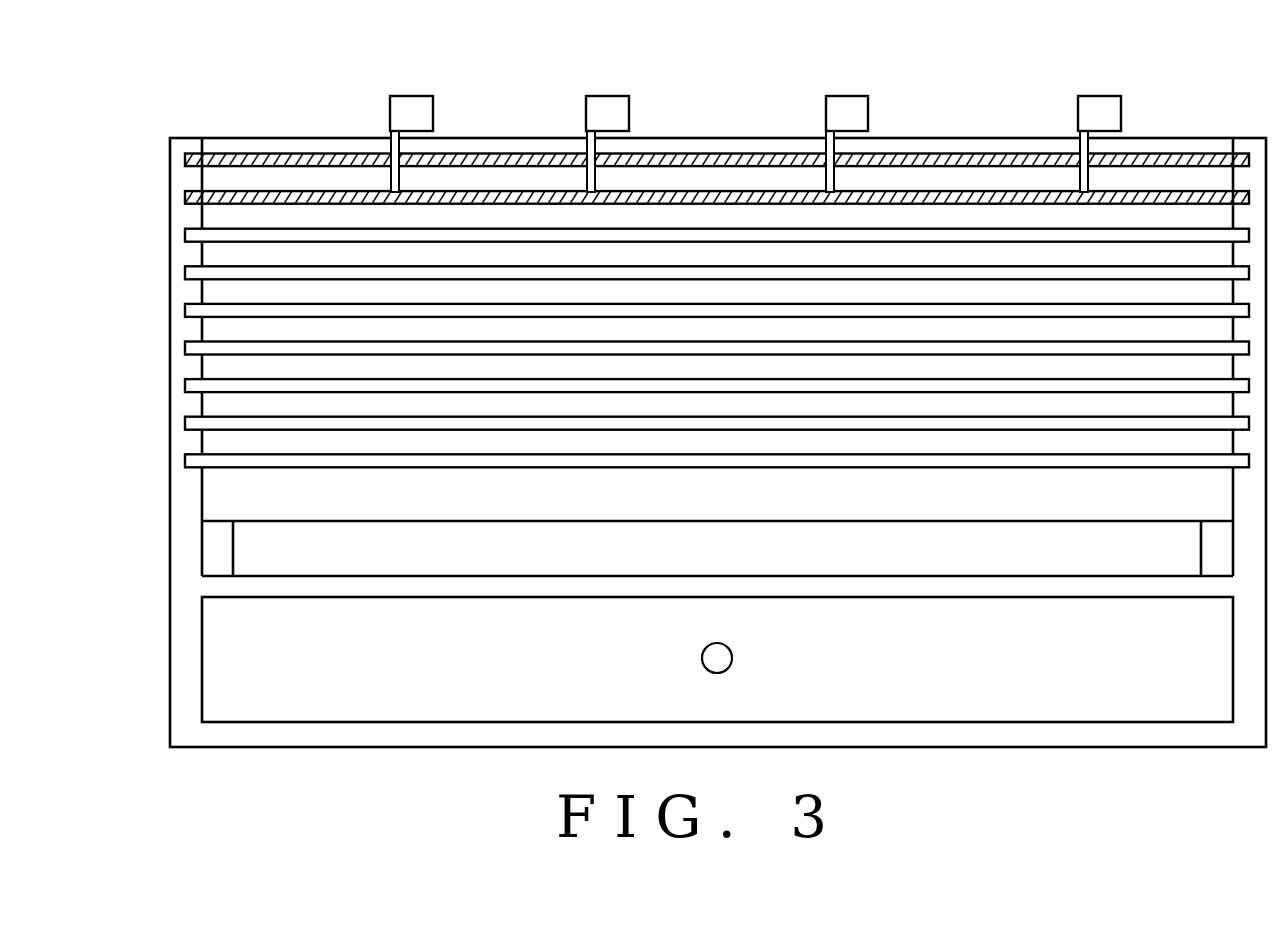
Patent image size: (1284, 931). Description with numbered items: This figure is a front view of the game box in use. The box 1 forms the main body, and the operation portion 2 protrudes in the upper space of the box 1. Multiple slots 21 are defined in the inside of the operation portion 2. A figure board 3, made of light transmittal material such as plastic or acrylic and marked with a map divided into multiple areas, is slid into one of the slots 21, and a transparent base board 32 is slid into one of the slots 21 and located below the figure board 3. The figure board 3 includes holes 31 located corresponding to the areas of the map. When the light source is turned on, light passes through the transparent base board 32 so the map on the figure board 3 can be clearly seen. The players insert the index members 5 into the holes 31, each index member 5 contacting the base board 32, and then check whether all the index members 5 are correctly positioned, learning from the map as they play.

The box 1 is at (190, 710).
The operation portion 2 is at (175, 448).
The slots 21 is at (218, 274).
The figure board 3 is at (700, 109).
The holes 31 is at (406, 156).
The transparent base board 32 is at (240, 195).
The index member 5 is at (401, 115).